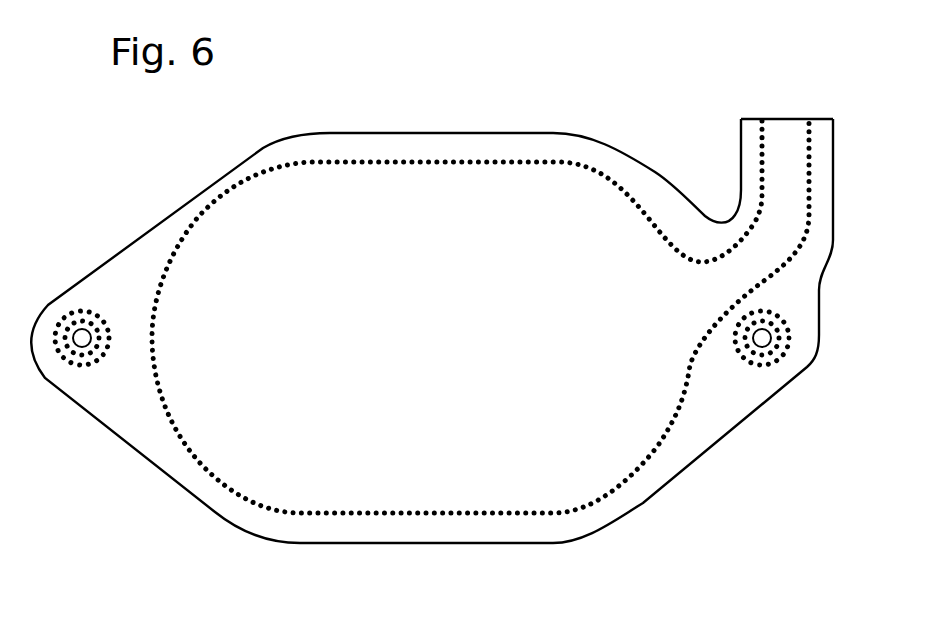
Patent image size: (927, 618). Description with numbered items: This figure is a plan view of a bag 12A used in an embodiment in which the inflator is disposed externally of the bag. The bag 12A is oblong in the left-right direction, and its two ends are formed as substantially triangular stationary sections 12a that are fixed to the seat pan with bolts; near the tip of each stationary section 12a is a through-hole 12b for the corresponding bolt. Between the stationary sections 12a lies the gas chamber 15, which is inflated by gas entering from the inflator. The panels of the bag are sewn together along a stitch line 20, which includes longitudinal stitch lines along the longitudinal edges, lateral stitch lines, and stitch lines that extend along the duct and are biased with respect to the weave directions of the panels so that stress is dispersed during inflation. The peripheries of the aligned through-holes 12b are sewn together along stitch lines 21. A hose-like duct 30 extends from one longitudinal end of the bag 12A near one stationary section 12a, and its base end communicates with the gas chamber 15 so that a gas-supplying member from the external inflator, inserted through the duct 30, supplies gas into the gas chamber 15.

The bag 12A is at (579, 107).
The stationary section 12a is at (30, 306).
The through-hole 12b is at (74, 346).
The gas chamber 15 is at (388, 382).
The stitch line 20 is at (415, 160).
The stitch line 21 is at (108, 318).
The duct 30 is at (785, 128).